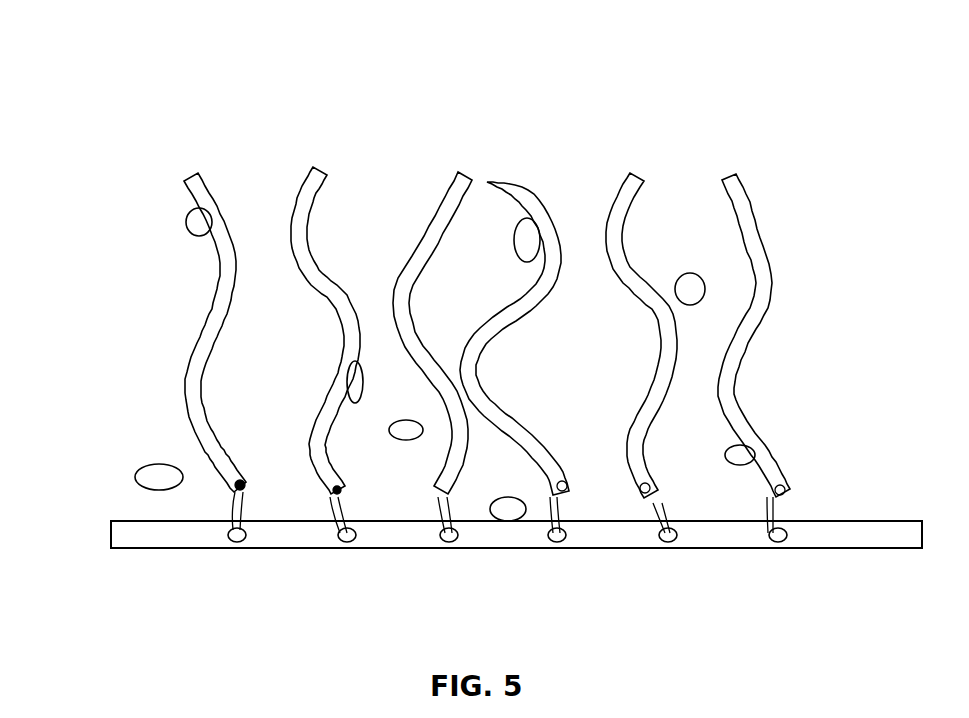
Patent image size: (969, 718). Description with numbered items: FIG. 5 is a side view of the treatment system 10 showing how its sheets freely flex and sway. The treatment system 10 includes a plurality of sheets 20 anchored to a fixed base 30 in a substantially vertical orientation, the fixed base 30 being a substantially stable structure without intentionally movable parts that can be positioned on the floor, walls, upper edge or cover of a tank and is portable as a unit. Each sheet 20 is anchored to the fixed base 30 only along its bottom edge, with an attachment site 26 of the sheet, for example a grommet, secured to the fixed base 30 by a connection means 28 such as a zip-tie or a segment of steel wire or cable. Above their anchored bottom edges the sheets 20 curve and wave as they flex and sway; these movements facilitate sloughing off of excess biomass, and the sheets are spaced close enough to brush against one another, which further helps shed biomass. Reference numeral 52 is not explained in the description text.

The treatment system 10 is at (158, 126).
The sheets 20 is at (727, 190).
The attachment site 26 is at (502, 548).
The connection means 28 is at (666, 541).
The fixed base 30 is at (122, 532).
The adhesive deposits 52 is at (416, 364).